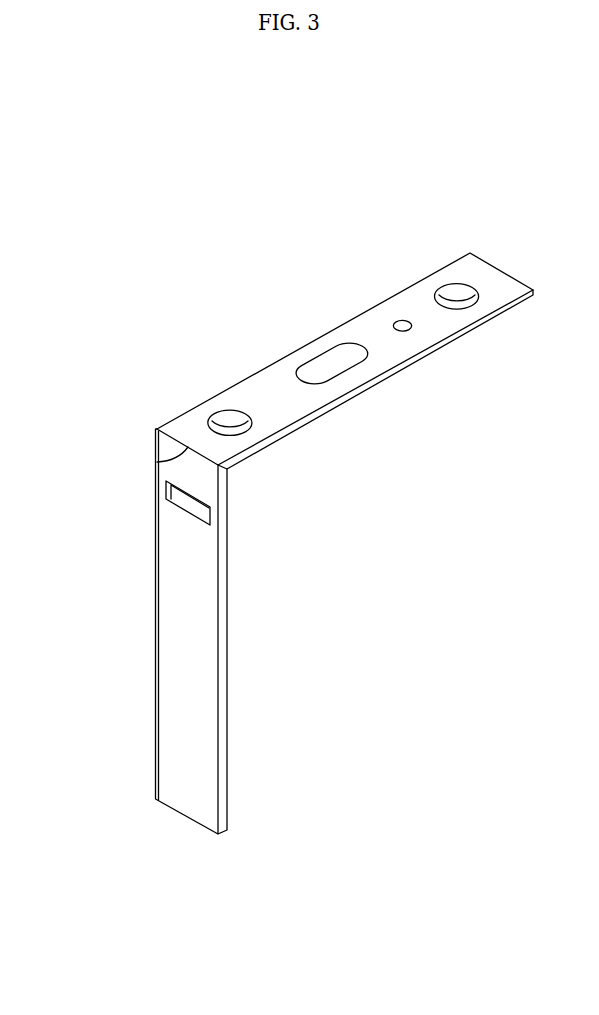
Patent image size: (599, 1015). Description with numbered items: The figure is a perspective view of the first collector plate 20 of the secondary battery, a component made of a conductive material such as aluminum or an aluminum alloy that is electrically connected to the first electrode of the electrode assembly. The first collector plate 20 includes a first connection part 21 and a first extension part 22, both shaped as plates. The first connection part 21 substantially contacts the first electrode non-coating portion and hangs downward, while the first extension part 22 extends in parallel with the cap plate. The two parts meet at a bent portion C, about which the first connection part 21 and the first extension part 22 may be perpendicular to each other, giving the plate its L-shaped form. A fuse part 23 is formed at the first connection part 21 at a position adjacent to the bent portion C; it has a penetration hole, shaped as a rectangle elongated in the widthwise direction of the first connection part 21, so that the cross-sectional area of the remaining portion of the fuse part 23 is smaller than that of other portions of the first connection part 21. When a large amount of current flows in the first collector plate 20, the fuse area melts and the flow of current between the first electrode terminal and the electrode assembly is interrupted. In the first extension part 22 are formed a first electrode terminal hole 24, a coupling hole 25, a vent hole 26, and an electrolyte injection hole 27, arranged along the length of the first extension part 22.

The first collector plate 20 is at (84, 231).
The first connection part 21 is at (173, 652).
The first extension part 22 is at (262, 383).
The fuse part 23 is at (150, 498).
The first electrode terminal hole 24 is at (227, 423).
The coupling hole 25 is at (457, 297).
The vent hole 26 is at (330, 362).
The electrolyte injection hole 27 is at (403, 325).
The bent portion C is at (157, 462).